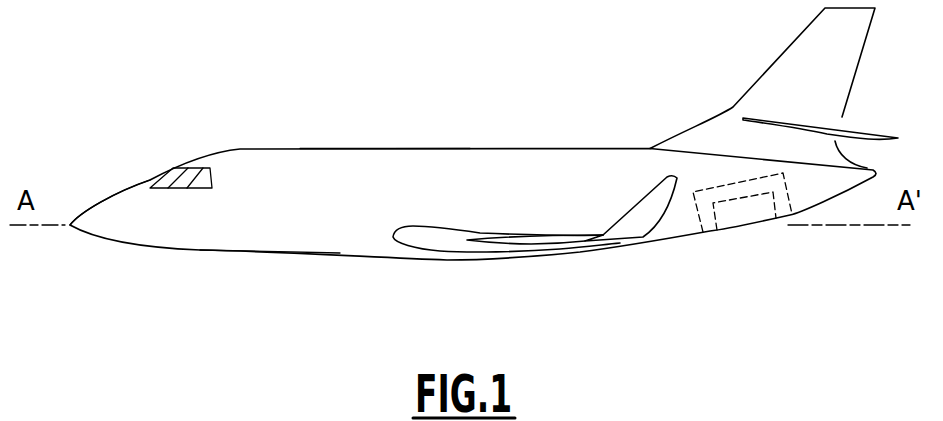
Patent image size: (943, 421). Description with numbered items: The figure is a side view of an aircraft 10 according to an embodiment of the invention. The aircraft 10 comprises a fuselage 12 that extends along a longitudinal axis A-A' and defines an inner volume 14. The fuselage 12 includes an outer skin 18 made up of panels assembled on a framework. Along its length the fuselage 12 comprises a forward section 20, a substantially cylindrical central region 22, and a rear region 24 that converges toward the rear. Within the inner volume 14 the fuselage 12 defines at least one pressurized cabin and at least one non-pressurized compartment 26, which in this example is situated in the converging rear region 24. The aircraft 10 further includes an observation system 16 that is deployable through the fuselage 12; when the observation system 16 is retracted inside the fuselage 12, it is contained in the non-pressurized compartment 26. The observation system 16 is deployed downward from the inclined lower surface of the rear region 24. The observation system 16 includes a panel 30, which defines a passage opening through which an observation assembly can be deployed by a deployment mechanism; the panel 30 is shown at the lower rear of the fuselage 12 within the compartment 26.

The aircraft 10 is at (128, 110).
The fuselage 12 is at (281, 125).
The inner volume 14 is at (385, 165).
The observation system 16 is at (738, 166).
The outer skin 18 is at (448, 260).
The forward section 20 is at (138, 233).
The central region 22 is at (282, 237).
The rear region 24 is at (652, 242).
The non-pressurized compartment 26 is at (708, 163).
The panel 30 is at (747, 227).